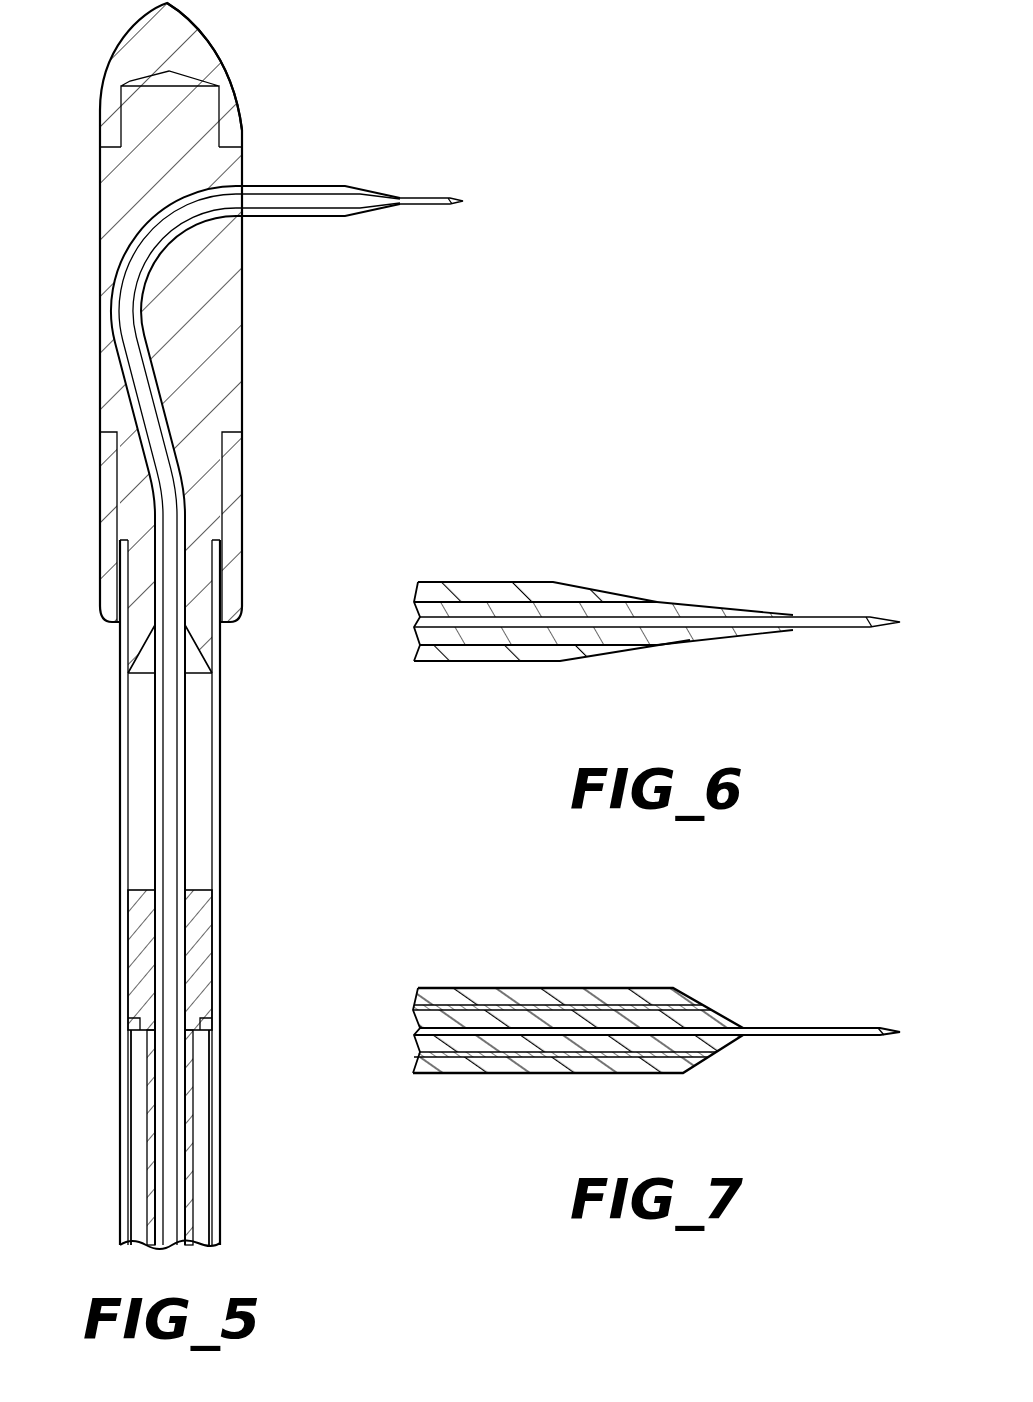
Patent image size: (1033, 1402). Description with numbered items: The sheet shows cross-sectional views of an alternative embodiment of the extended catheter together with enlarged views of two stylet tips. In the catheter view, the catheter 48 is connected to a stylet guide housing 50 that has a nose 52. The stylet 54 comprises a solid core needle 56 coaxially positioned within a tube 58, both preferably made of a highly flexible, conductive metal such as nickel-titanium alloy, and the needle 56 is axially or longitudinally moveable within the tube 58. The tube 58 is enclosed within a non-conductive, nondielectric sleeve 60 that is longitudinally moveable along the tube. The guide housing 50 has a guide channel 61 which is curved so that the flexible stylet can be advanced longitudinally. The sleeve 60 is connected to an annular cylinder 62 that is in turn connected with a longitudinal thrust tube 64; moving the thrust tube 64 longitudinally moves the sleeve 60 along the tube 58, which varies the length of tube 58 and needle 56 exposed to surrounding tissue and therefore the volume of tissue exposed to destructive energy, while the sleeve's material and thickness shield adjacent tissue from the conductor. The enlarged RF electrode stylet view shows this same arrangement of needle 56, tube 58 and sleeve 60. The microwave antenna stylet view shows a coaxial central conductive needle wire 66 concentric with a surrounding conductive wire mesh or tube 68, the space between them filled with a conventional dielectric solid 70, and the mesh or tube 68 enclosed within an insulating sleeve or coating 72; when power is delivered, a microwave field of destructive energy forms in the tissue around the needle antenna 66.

In FIG. 5, the catheter 48 is at (222, 710).
In FIG. 5, the stylet guide housing 50 is at (107, 533).
In FIG. 5, the nose 52 is at (220, 68).
In FIG. 5, the stylet 54 is at (349, 256).
In FIG. 6, the stylet 54 is at (657, 624).
In FIG. 6, the solid core needle 56 is at (813, 628).
In FIG. 6, the tube 58 is at (702, 602).
In FIG. 5, the sleeve 60 is at (294, 220).
In FIG. 6, the sleeve 60 is at (508, 585).
In FIG. 5, the guide channel 61 is at (112, 348).
In FIG. 5, the annular cylinder 62 is at (142, 957).
In FIG. 5, the longitudinal thrust tube 64 is at (195, 1098).
In FIG. 7, the central conductive needle wire 66 is at (787, 1035).
In FIG. 7, the conductive wire mesh or tube 68 is at (700, 997).
In FIG. 7, the dielectric solid 70 is at (517, 1017).
In FIG. 7, the insulating sleeve or coating 72 is at (610, 1065).